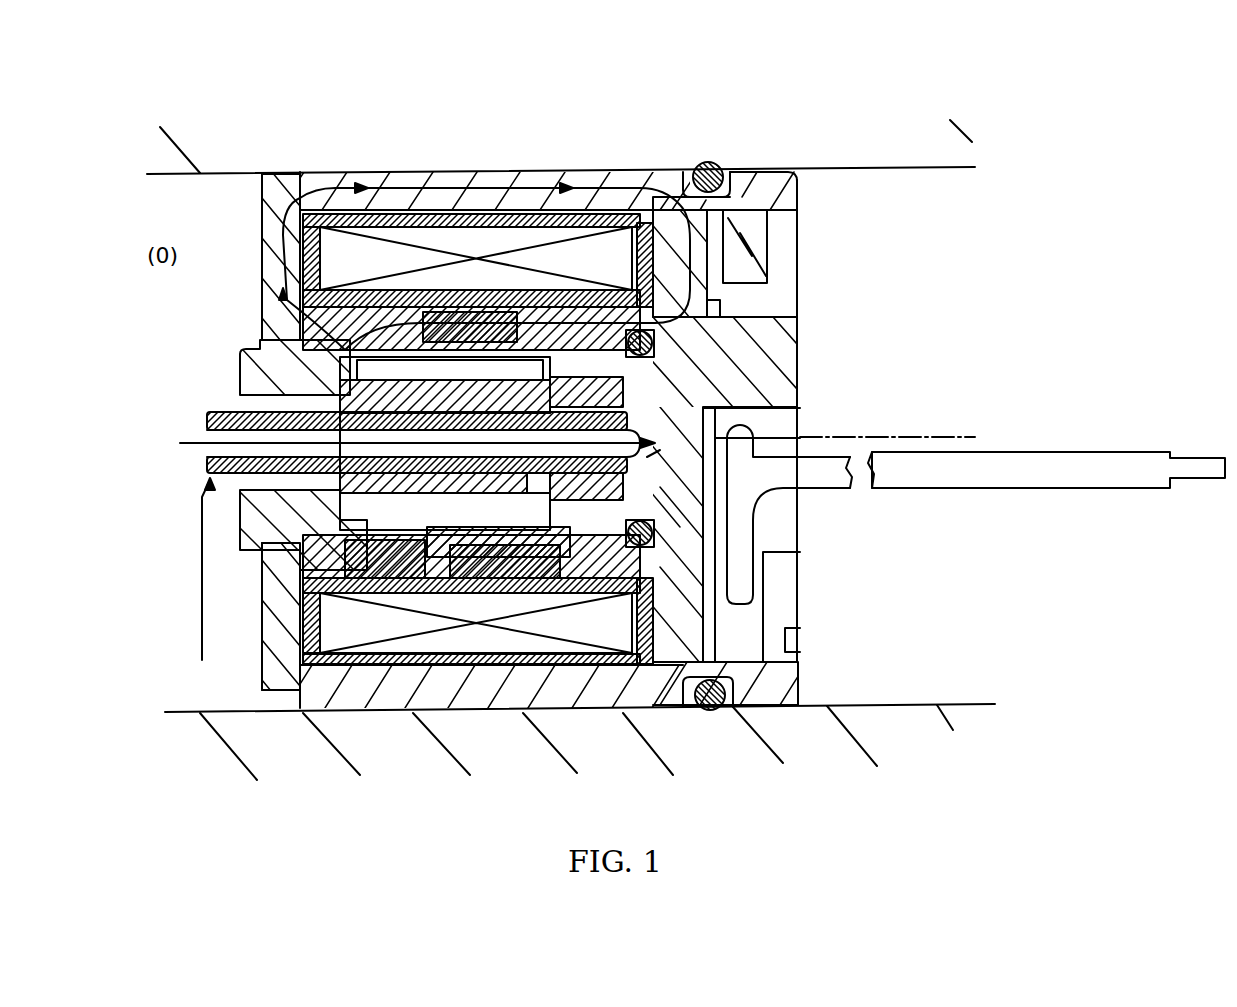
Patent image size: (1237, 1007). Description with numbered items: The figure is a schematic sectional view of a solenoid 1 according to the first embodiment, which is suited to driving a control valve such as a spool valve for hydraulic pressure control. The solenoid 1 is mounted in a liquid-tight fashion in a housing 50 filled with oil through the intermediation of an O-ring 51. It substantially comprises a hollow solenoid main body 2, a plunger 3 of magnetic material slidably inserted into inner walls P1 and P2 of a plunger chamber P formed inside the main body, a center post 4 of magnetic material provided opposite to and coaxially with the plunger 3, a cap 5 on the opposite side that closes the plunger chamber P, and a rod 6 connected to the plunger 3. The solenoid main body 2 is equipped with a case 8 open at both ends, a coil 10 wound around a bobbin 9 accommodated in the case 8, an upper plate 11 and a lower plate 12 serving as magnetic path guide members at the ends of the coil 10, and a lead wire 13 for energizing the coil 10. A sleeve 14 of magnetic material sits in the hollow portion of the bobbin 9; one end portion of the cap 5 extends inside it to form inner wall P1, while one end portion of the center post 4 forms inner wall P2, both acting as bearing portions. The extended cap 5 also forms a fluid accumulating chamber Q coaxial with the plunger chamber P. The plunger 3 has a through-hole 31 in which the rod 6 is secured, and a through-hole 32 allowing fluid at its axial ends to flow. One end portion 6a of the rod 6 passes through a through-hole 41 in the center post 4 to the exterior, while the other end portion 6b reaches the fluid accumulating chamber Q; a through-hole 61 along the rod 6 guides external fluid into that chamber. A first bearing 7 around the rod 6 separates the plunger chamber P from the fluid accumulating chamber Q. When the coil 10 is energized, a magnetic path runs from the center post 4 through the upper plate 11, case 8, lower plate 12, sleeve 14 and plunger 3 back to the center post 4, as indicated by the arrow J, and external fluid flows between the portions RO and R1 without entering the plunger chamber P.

The solenoid 1 is at (907, 247).
The solenoid main body 2 is at (743, 183).
The plunger 3 is at (403, 290).
The center post 4 is at (243, 358).
The cap 5 is at (800, 357).
The rod 6 is at (507, 237).
The one end portion of rod 6a is at (202, 660).
The other end portion of rod 6b is at (673, 650).
The first bearing 7 is at (573, 330).
The case 8 is at (783, 192).
The bobbin 9 is at (333, 245).
The coil 10 is at (520, 225).
The upper plate 11 is at (263, 230).
The lower plate 12 is at (687, 270).
The lead wire 13 is at (945, 465).
The sleeve 14 is at (637, 212).
The through-hole 31 is at (368, 530).
The through-hole 32 is at (462, 530).
The through-hole 41 is at (243, 470).
The housing 50 is at (987, 704).
The O-ring 51 is at (708, 713).
The through-hole 61 is at (300, 600).
The arrow J is at (353, 237).
The plunger chamber P is at (540, 297).
The inner wall P1 is at (535, 580).
The inner wall P2 is at (357, 600).
The fluid accumulating chamber Q is at (640, 393).
The portion R1 is at (647, 457).
The portion RO is at (200, 443).